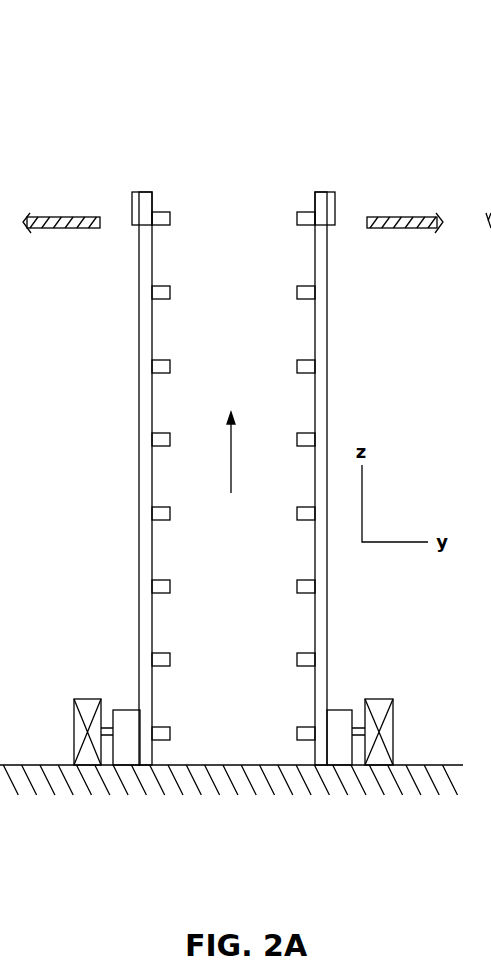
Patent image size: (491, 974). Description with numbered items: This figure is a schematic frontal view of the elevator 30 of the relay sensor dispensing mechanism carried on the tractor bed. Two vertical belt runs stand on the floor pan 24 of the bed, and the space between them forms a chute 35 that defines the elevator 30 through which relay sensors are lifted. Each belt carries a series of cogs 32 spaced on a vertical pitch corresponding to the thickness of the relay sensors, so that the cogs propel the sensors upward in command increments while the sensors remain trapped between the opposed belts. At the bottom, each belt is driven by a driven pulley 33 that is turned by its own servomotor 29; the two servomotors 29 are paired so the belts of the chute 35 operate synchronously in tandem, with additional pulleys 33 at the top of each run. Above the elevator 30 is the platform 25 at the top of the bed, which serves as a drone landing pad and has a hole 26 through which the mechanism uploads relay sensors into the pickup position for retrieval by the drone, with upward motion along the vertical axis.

The floor pan 24 is at (440, 768).
The platform 25 is at (58, 217).
The hole 26 is at (351, 218).
The servomotor 29 is at (88, 705).
The elevator 30 is at (253, 62).
The cogs 32 is at (170, 587).
The driven pulley 33 is at (136, 200).
The chute 35 is at (200, 396).